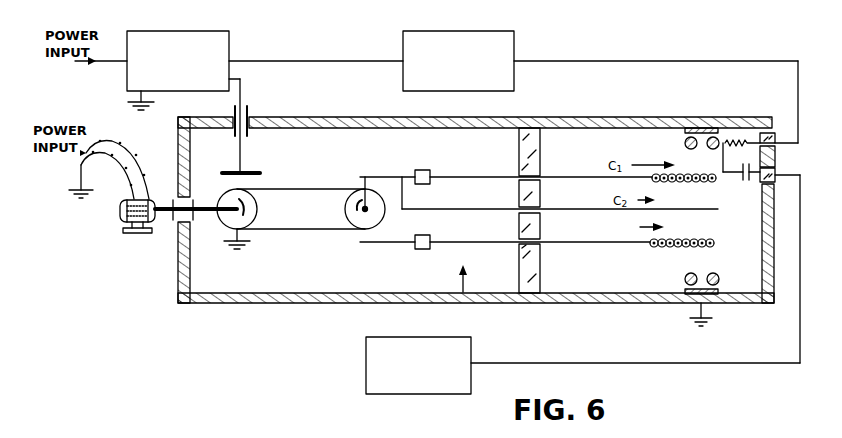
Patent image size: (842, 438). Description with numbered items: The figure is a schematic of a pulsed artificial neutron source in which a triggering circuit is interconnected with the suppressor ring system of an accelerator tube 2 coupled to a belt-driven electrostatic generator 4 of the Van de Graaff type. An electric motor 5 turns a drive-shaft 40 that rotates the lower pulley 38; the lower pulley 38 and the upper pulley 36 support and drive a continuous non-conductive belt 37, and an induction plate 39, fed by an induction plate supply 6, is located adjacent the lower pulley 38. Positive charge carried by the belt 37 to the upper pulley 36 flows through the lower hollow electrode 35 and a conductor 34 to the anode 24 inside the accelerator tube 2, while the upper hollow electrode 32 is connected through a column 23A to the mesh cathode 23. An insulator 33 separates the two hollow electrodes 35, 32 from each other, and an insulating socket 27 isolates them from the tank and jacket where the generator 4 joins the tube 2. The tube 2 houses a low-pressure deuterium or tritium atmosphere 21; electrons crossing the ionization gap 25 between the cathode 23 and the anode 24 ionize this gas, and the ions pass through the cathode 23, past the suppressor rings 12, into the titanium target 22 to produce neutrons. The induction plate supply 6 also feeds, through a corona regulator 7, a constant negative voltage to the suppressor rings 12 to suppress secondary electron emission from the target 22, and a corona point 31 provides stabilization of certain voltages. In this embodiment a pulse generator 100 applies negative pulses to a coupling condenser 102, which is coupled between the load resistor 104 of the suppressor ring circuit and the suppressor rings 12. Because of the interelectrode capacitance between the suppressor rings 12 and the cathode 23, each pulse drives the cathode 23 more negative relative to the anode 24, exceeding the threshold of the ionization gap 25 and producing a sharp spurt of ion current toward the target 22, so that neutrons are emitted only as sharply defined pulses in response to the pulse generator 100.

The accelerator tube 2 is at (476, 198).
The belt-driven electrostatic generator 4 is at (376, 117).
The electric motor 5 is at (149, 199).
The induction plate supply 6 is at (230, 33).
The corona regulator 7 is at (514, 32).
The suppressor rings 12 is at (686, 147).
The atmosphere 21 is at (604, 287).
The belt-shaped target 22 is at (685, 131).
The cathode 23 is at (702, 182).
The column 23A is at (630, 256).
The anode 24 is at (703, 209).
The ionization gap 25 is at (641, 227).
The insulating socket 27 is at (541, 150).
The corona point 31 is at (461, 284).
The upper hollow electrode 32 is at (472, 177).
The insulator 33 is at (425, 170).
The conductor 34 is at (402, 196).
The lower hollow electrode 35 is at (405, 177).
The upper pulley 36 is at (345, 210).
The belt 37 is at (330, 189).
The lower pulley 38 is at (258, 209).
The induction plate 39 is at (245, 171).
The drive-shaft 40 is at (168, 214).
The pulse generator 100 is at (471, 345).
The coupling condenser 102 is at (753, 179).
The load resistor 104 is at (724, 146).